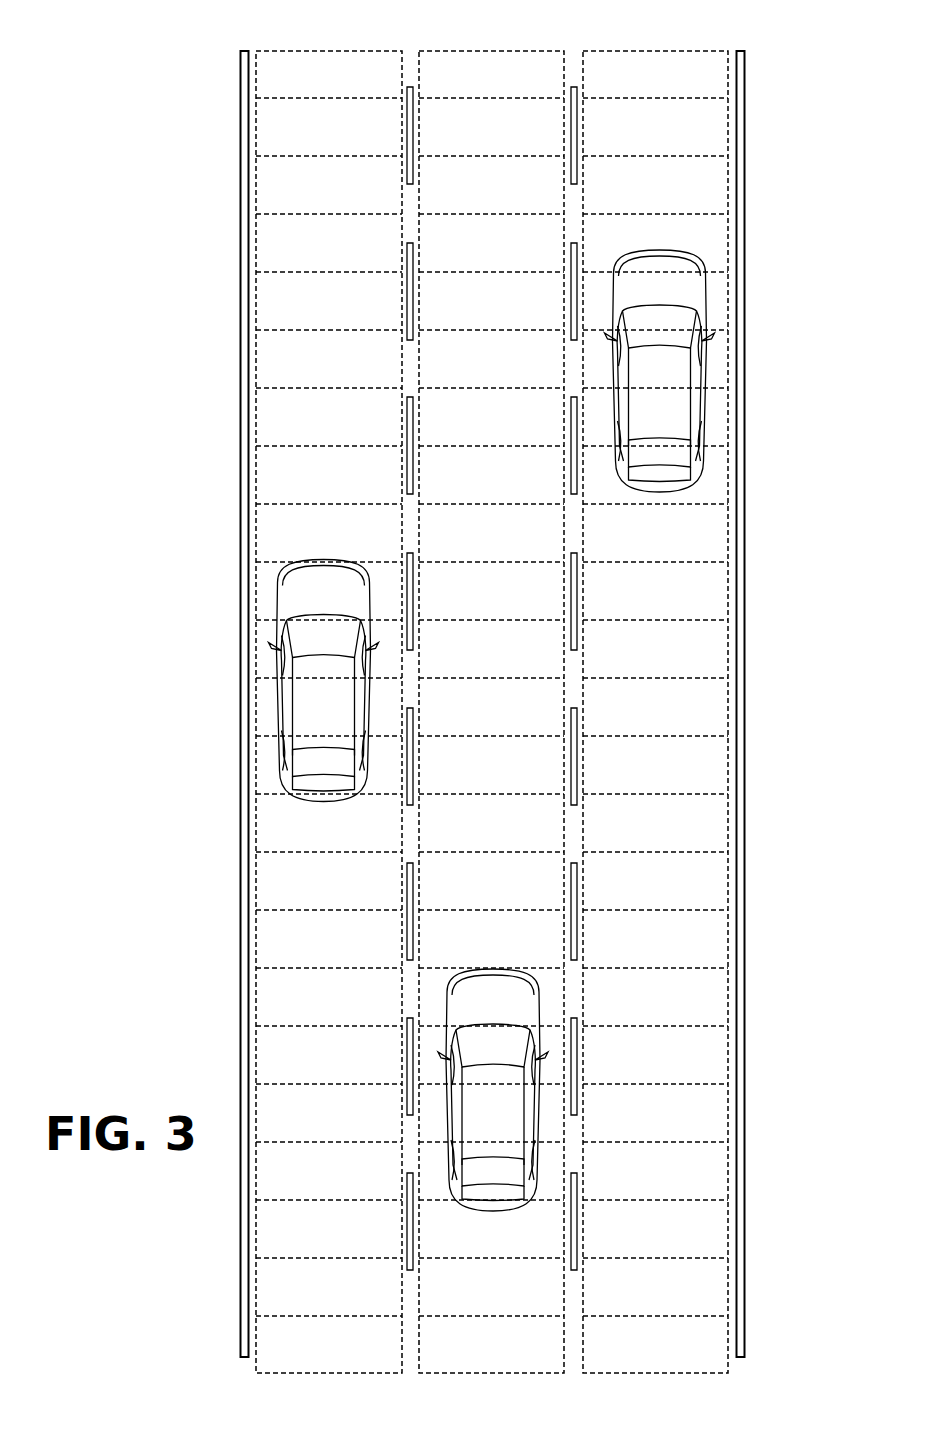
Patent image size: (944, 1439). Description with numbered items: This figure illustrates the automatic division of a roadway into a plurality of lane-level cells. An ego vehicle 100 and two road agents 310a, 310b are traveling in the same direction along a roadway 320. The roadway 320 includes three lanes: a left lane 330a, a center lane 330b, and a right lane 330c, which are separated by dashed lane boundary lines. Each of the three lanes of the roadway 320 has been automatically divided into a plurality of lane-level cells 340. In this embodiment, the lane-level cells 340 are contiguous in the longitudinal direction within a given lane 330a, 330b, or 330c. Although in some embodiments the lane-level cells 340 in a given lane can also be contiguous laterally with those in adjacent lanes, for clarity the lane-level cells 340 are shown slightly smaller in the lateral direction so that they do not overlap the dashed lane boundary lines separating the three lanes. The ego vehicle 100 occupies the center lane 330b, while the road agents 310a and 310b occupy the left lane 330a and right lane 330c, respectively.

The ego vehicle 100 is at (500, 1005).
The road agent 310a is at (318, 598).
The road agent 310b is at (672, 306).
The roadway 320 is at (745, 641).
The left lane 330a is at (312, 46).
The center lane 330b is at (484, 46).
The right lane 330c is at (658, 46).
The lane-level cells 340 is at (553, 686).